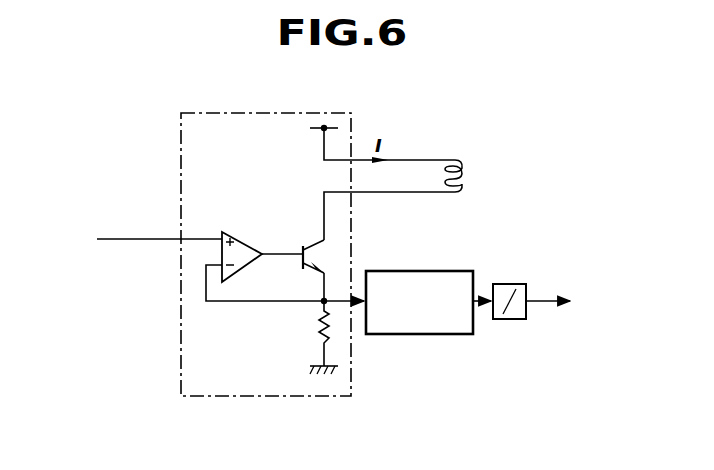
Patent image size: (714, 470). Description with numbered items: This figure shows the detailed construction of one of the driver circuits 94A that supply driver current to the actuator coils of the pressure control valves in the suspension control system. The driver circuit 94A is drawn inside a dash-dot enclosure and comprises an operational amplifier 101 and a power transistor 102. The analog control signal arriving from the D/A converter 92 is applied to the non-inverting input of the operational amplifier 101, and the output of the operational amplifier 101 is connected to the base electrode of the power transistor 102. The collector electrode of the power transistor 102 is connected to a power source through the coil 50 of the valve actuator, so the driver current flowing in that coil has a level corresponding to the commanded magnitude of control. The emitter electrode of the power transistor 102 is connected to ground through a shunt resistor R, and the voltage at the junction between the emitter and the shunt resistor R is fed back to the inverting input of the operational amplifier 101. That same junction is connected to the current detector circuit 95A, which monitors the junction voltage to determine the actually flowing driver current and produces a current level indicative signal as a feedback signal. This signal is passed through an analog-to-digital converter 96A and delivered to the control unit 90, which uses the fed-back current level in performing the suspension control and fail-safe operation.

The coil (electromagnetic actuator winding) 50 is at (464, 178).
The D/A converter 92 is at (133, 225).
The control unit 90 is at (576, 303).
The operational amplifier 101 is at (245, 235).
The power transistor 102 is at (303, 247).
The shunt resistor R is at (320, 327).
The driver circuit 94A is at (245, 396).
The current detector circuit 95A is at (424, 271).
The A/D converter (96A~96D) 96A is at (515, 319).